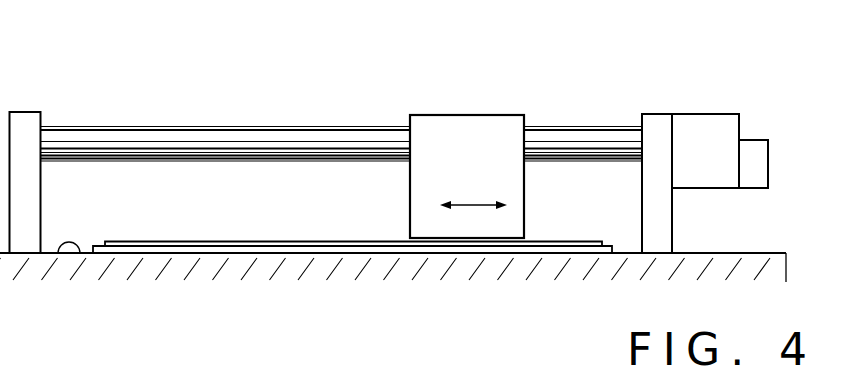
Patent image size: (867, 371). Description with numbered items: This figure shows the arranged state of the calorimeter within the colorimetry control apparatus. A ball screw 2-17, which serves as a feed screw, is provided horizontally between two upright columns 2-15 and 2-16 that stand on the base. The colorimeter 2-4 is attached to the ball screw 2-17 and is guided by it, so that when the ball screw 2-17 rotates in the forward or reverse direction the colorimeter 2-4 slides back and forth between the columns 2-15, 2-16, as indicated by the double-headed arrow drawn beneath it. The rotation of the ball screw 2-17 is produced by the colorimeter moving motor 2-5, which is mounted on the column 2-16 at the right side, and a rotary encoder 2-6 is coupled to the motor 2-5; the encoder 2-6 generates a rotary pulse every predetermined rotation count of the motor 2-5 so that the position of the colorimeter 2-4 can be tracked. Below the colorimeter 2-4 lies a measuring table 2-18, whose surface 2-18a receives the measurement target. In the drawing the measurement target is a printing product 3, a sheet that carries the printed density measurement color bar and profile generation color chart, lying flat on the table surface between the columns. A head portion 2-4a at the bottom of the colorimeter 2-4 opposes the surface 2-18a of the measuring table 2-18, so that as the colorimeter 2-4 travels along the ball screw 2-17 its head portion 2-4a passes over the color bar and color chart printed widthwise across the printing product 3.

The column 2-15 is at (25, 118).
The ball screw 2-17 is at (322, 132).
The colorimeter 2-4 is at (503, 123).
The head portion 2-4a is at (410, 238).
The printing product 3 is at (585, 253).
The column 2-16 is at (658, 120).
The colorimeter moving motor 2-5 is at (720, 120).
The rotary encoder 2-6 is at (772, 160).
The measuring table 2-18 is at (737, 252).
The surface of measuring table 2-18a is at (59, 253).